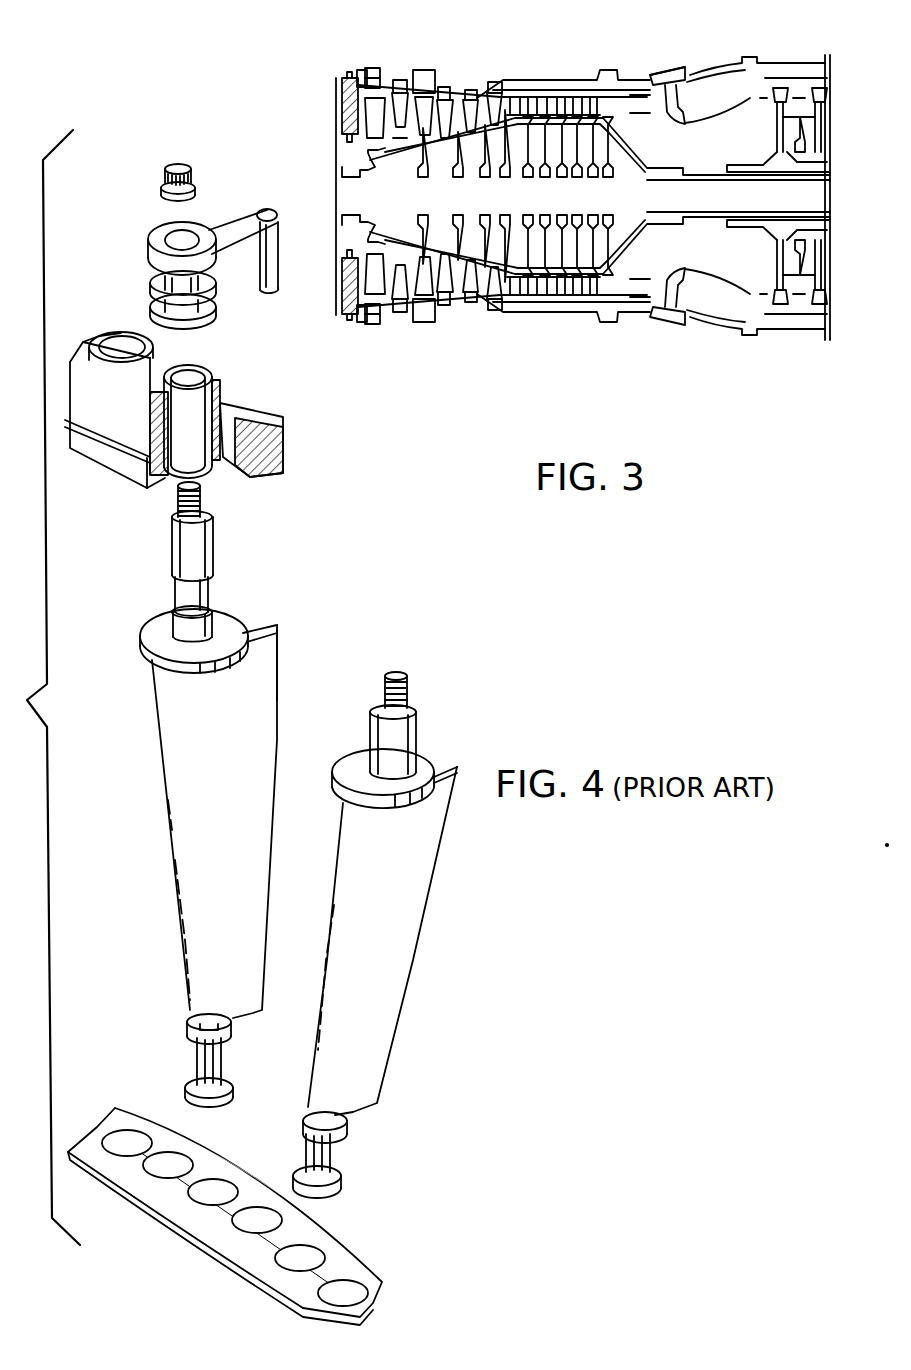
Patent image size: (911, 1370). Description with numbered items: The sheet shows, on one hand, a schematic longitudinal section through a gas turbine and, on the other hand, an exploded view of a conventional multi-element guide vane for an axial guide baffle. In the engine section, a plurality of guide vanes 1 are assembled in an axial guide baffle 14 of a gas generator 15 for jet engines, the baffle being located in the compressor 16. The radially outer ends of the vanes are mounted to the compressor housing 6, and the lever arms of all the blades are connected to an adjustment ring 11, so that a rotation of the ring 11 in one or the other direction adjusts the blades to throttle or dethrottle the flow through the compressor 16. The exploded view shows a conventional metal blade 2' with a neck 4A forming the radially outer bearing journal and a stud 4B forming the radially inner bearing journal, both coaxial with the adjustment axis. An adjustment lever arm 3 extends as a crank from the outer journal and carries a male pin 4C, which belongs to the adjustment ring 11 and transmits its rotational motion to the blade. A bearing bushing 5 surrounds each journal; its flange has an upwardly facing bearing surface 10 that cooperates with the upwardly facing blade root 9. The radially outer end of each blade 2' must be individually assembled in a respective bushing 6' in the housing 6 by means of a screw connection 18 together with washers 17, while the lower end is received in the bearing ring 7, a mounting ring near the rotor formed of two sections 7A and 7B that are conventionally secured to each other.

In FIG. 3, the guide vane 1 is at (346, 120).
In FIG. 4, the guide vane 1 is at (292, 641).
In FIG. 4, the conventional metal blade 2' is at (334, 870).
In FIG. 3, the adjustment lever arm 3 is at (360, 73).
In FIG. 4, the adjustment lever arm 3 is at (238, 222).
In FIG. 4, the neck 4A is at (196, 592).
In FIG. 4, the stud 4B is at (200, 1063).
In FIG. 4, the male pin 4C is at (262, 288).
In FIG. 4, the bearing bushing 5 is at (157, 655).
In FIG. 3, the compressor housing 6 is at (474, 164).
In FIG. 4, the compressor housing 6 is at (189, 410).
In FIG. 4, the bushing 6' is at (197, 407).
In FIG. 3, the bearing ring 7 is at (400, 138).
In FIG. 4, the bearing ring 7 is at (323, 1247).
In FIG. 4, the mounting ring section 7A is at (207, 1165).
In FIG. 4, the mounting ring section 7B is at (167, 1183).
In FIG. 4, the blade root 9 is at (440, 765).
In FIG. 4, the bearing surface 10 is at (155, 622).
In FIG. 3, the adjustment ring 11 is at (378, 78).
In FIG. 3, the axial guide baffle 14 is at (334, 70).
In FIG. 3, the gas generator 15 is at (580, 75).
In FIG. 3, the compressor 16 is at (603, 378).
In FIG. 4, the washer 17 is at (150, 305).
In FIG. 4, the screw connection 18 is at (162, 175).